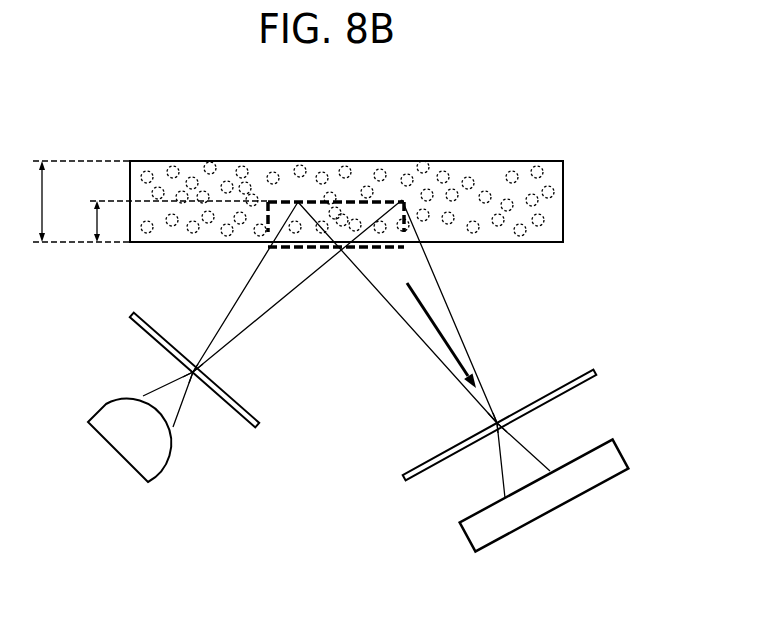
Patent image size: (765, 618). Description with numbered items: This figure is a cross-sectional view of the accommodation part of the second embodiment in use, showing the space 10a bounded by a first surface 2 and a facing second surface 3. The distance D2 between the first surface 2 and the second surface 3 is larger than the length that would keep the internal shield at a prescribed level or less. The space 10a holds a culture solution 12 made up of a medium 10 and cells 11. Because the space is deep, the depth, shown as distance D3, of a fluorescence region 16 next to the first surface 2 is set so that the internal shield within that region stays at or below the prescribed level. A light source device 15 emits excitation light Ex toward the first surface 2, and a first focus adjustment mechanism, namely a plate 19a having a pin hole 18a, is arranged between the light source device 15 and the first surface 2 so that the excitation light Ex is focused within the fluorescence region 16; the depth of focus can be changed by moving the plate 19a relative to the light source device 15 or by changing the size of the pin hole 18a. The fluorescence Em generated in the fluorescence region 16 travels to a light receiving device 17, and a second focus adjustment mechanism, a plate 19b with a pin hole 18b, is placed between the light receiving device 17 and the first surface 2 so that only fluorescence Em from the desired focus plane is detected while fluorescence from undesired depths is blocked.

The first surface 2 is at (217, 243).
The second surface 3 is at (267, 161).
The medium 10 is at (463, 161).
The space 10a is at (213, 157).
The cell 11 is at (465, 105).
The culture solution 12 is at (346, 153).
The light source device 15 is at (127, 443).
The fluorescence region 16 is at (313, 248).
The light receiving device 17 is at (548, 498).
The pin hole 18a is at (192, 380).
The pin hole 18b is at (497, 423).
The plate 19a is at (258, 427).
The plate 19b is at (403, 478).
The excitation light Ex is at (265, 313).
The fluorescence Em is at (458, 327).
The distance D2 is at (68, 201).
The distance D3 is at (165, 221).